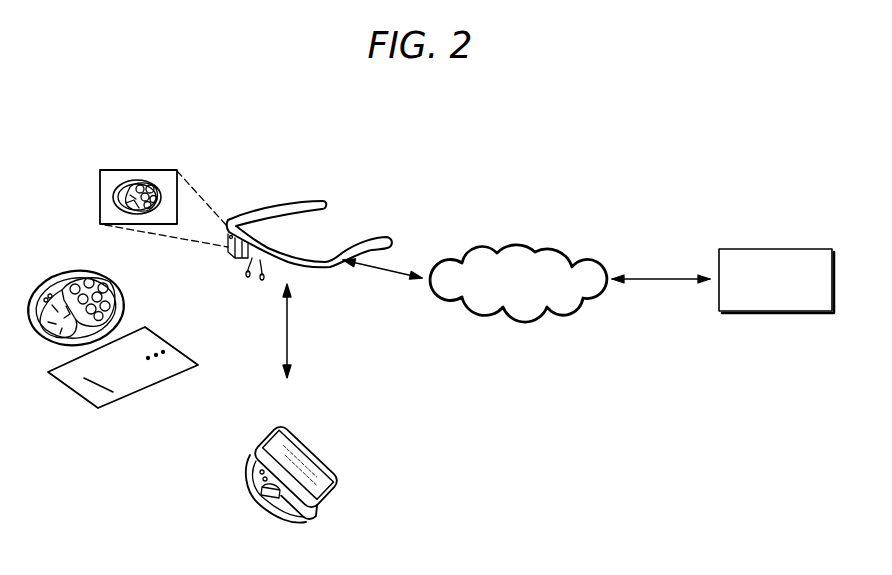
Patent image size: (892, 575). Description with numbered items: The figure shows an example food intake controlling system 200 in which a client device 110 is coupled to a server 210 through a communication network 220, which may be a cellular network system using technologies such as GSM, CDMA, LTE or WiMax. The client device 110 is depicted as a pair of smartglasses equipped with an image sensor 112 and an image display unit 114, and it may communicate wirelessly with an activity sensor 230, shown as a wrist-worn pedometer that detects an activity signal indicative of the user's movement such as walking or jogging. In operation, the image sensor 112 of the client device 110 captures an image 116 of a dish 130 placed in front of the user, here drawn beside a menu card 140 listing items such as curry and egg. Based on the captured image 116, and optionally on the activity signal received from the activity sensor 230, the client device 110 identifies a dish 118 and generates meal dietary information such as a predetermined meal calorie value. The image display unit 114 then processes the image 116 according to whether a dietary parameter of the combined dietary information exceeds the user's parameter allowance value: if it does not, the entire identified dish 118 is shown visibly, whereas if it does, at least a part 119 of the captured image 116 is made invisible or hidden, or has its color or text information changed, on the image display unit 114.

The client device 110 is at (304, 201).
The image sensor 112 is at (222, 226).
The image display unit 114 is at (243, 237).
The image 116 is at (118, 170).
The dish 118 is at (144, 182).
The part of captured image 119 is at (130, 200).
The dish 130 is at (120, 302).
The menu card 140 is at (158, 375).
The food intake controlling system 200 is at (673, 145).
The server 210 is at (798, 249).
The communication network 220 is at (560, 250).
The activity sensor 230 is at (305, 469).